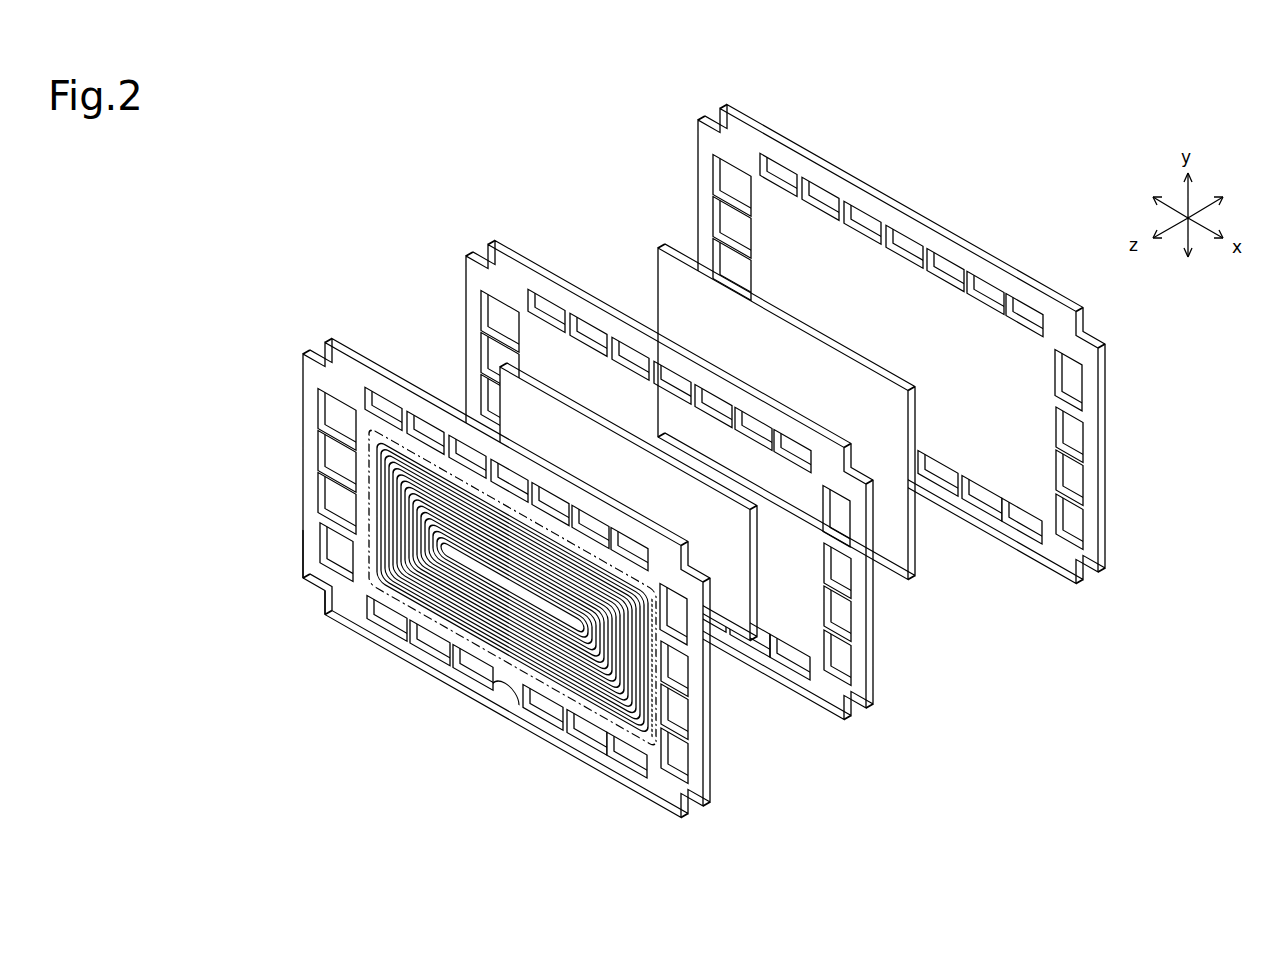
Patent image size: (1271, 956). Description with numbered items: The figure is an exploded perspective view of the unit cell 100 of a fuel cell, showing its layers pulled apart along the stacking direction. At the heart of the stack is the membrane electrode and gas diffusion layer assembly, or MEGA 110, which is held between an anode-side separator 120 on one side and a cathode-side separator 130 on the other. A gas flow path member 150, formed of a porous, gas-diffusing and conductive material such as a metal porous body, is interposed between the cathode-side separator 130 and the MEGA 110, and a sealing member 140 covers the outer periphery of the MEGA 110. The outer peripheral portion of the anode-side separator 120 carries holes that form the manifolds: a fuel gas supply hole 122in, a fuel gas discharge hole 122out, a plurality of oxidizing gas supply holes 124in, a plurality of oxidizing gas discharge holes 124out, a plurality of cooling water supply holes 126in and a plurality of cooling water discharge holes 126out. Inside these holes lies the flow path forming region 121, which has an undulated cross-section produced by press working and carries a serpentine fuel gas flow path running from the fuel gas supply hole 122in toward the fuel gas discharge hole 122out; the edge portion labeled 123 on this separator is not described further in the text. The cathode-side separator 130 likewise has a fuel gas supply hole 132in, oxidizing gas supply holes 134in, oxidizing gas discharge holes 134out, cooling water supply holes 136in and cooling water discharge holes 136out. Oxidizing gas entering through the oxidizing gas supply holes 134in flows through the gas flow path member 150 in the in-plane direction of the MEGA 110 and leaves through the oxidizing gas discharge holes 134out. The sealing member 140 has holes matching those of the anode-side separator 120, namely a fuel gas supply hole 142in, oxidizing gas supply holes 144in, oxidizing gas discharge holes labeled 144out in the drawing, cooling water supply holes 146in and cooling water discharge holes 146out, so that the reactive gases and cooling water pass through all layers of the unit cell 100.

The unit cell 100 is at (684, 461).
The membrane electrode and gas diffusion layer assembly (MEGA) 110 is at (758, 652).
The anode-side separator 120 is at (628, 790).
The flow path forming region 121 is at (327, 613).
The outer edge portion of separator plate 123 is at (303, 578).
The fuel gas supply hole 122in is at (673, 614).
The fuel gas discharge hole 122out is at (336, 552).
The oxidizing gas supply holes 124in is at (627, 755).
The oxidizing gas discharge holes 124out is at (629, 544).
The cooling water supply holes 126in is at (674, 755).
The cooling water discharge holes 126out is at (337, 503).
The cathode-side separator 130 is at (1058, 298).
The fuel gas supply hole 132in is at (1068, 380).
The oxidizing gas supply holes 134in is at (1022, 521).
The oxidizing gas discharge holes 134out is at (1024, 310).
The cooling water supply holes 136in is at (1069, 521).
The cooling water discharge holes 136out is at (732, 269).
The sealing member 140 is at (870, 664).
The fuel gas supply hole 142in is at (836, 516).
The oxidizing gas supply holes 144in is at (790, 657).
The fuel gas outlet manifold holes 144out is at (792, 446).
The cooling water supply holes 146in is at (837, 657).
The cooling water discharge holes 146out is at (500, 405).
The gas flow path member 150 is at (805, 402).